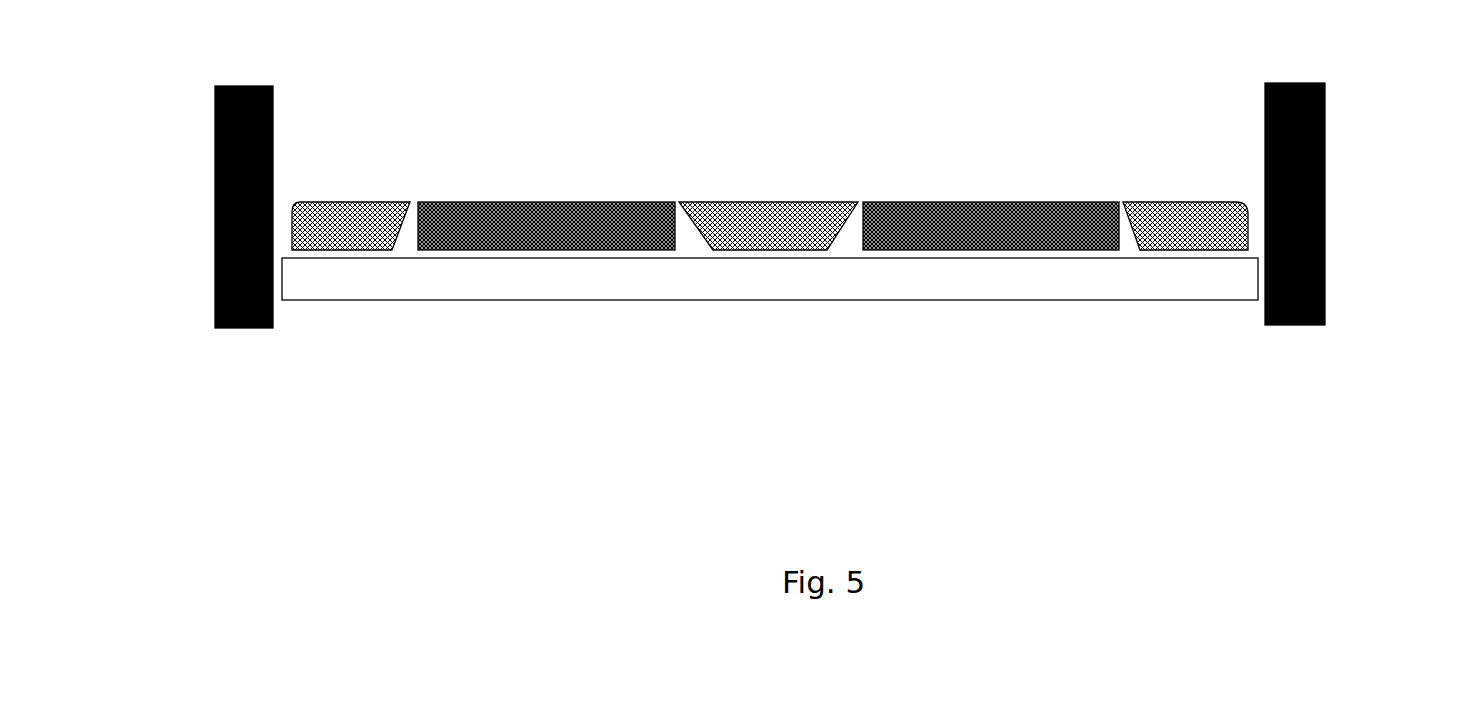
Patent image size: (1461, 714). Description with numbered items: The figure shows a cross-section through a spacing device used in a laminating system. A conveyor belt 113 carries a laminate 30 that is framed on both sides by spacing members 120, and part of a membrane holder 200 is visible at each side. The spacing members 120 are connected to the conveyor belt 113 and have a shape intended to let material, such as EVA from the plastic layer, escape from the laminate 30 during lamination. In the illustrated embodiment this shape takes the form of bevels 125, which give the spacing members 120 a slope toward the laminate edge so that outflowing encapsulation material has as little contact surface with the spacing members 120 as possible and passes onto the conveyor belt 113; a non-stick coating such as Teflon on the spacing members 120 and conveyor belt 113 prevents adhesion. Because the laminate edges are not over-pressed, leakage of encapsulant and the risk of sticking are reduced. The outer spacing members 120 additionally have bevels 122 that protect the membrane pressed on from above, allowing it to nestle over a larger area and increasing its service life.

The membrane holder 200 is at (215, 187).
The conveyor belt 113 is at (1188, 273).
The laminate 30 is at (518, 240).
The bevels 122 is at (303, 203).
The spacing members 120 is at (1168, 203).
The bevels 125 is at (403, 240).